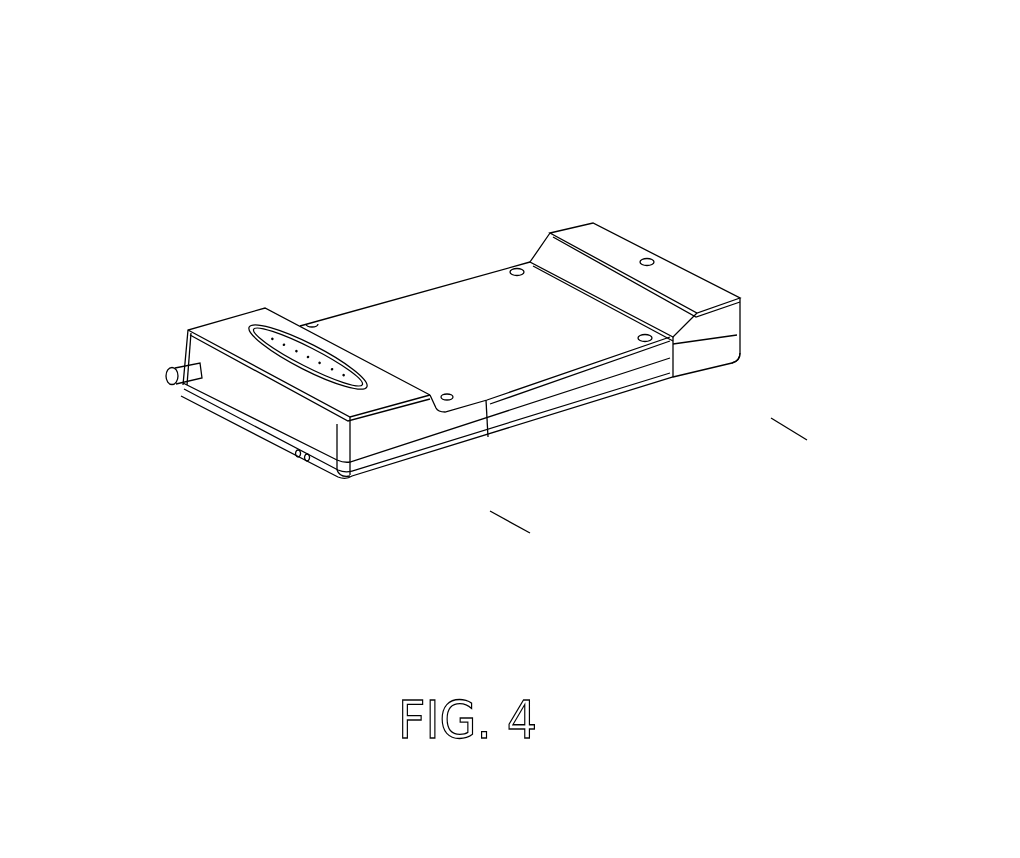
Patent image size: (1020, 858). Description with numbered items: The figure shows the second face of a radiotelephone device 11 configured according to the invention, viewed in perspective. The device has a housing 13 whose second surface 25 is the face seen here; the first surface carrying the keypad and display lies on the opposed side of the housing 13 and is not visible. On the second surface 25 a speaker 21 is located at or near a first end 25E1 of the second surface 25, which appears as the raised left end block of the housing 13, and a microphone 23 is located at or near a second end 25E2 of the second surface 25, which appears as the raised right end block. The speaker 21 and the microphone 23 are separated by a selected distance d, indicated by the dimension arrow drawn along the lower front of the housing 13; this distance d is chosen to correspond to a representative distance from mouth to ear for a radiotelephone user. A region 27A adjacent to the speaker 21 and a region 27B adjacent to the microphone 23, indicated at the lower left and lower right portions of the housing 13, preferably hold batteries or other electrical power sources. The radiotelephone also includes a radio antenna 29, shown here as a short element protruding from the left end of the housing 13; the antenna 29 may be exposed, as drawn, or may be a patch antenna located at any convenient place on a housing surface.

The radiotelephone device 11 is at (602, 103).
The housing 13 is at (396, 428).
The speaker 21 is at (310, 355).
The microphone 23 is at (648, 259).
The second surface 25 is at (566, 213).
The first end of the second surface 25E1 is at (172, 342).
The second end of the second surface 25E2 is at (715, 265).
The region adjacent to the speaker 27A is at (375, 480).
The region adjacent to the microphone 27B is at (735, 373).
The radio antenna 29 is at (168, 378).
The selected distance d is at (787, 433).